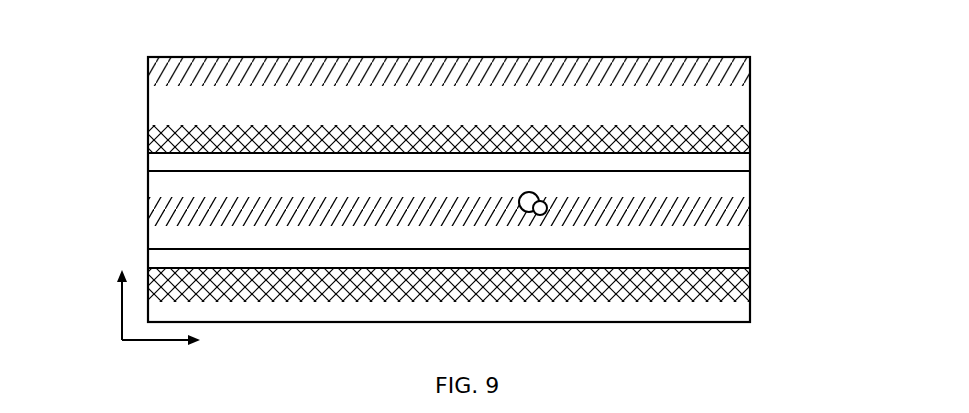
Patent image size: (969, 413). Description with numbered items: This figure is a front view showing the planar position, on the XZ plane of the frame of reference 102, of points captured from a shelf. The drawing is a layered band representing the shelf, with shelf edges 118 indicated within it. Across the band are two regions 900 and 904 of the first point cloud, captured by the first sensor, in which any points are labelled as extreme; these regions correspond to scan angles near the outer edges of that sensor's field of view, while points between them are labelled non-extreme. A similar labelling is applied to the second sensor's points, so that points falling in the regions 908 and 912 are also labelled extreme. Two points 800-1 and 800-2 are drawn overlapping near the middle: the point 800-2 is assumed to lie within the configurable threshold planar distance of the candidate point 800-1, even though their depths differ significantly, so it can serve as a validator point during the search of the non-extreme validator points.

The region 900 is at (722, 70).
The region 908 is at (165, 138).
The shelf edge 118 is at (750, 162).
The region 904 is at (735, 207).
The region 912 is at (165, 278).
The point 800-1 is at (548, 207).
The point 800-2 is at (518, 201).
The frame of reference 102 is at (122, 340).